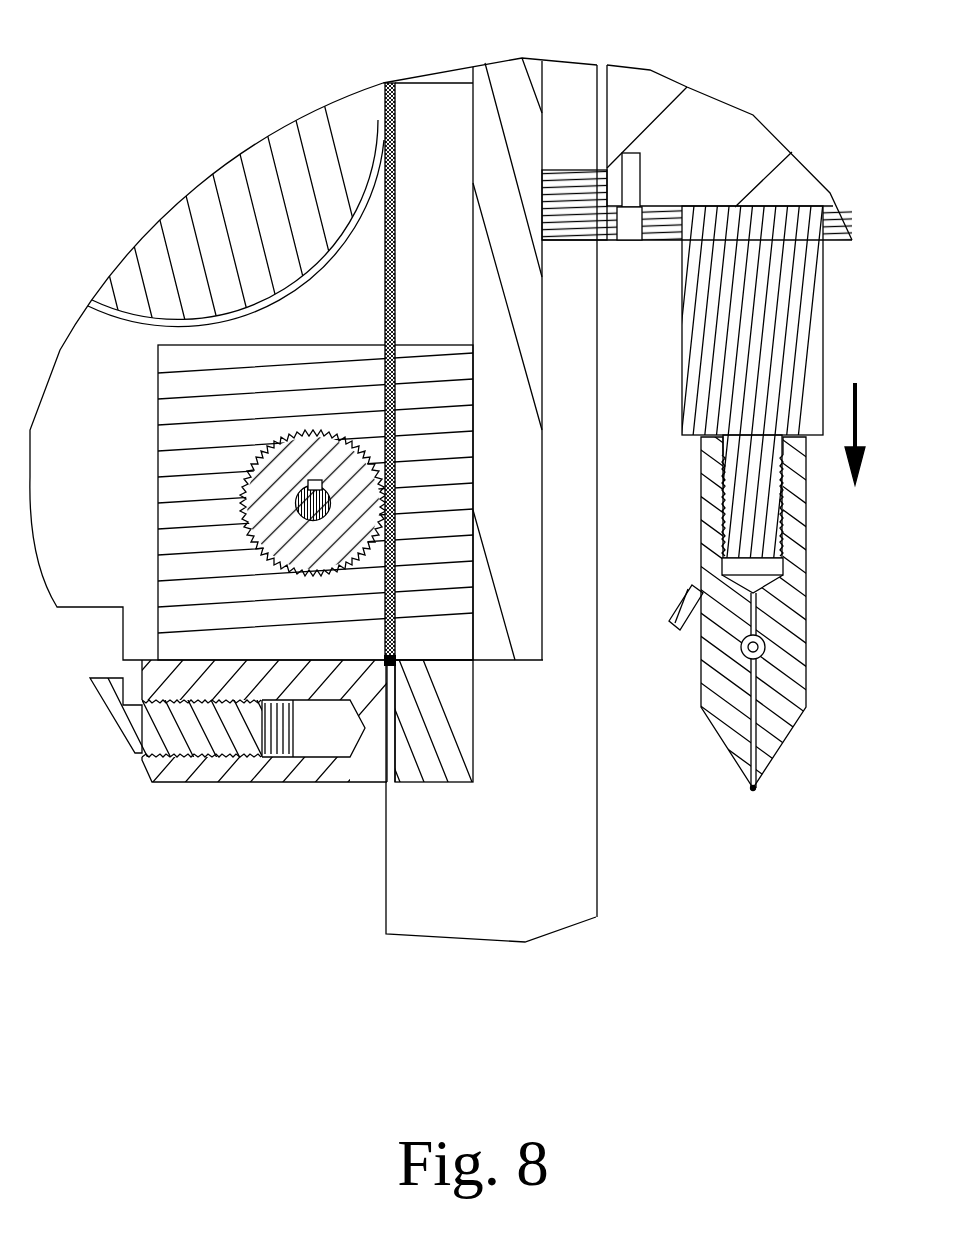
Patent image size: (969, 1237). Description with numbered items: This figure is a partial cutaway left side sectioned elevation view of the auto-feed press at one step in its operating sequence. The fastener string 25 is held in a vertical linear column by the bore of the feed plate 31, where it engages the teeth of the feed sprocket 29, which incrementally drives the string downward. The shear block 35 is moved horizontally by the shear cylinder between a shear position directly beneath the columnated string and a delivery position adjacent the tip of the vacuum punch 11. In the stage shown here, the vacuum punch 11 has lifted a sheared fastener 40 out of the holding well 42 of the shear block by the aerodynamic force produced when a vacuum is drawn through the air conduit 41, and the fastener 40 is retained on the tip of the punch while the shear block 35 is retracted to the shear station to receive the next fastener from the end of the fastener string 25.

The vacuum punch 11 is at (805, 640).
The fastener string 25 is at (397, 193).
The feed sprocket 29 is at (260, 527).
The feed plate 31 is at (177, 457).
The shear block 35 is at (472, 747).
The fastener 40 is at (753, 790).
The air conduit 41 is at (753, 747).
The holding well 42 is at (385, 720).